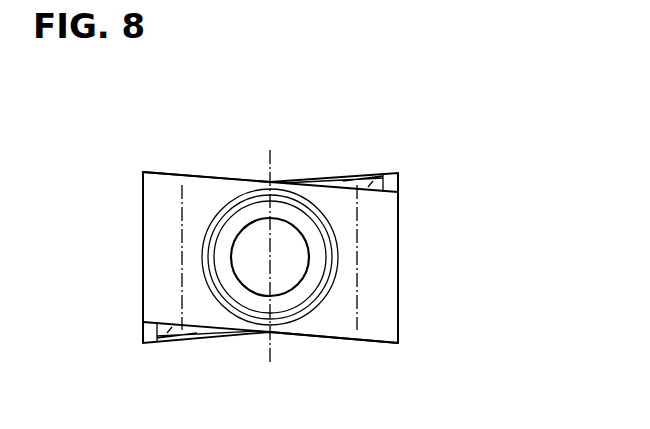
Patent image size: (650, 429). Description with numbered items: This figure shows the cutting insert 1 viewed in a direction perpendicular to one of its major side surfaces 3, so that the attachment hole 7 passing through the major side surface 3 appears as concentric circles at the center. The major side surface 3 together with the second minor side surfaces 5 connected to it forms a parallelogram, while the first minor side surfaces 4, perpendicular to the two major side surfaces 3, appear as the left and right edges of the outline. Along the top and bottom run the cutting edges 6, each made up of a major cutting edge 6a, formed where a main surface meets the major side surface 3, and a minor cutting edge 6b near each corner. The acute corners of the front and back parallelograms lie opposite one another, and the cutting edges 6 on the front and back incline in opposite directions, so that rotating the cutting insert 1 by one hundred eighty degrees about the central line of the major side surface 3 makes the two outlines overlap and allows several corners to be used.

The cutting insert 1 is at (427, 236).
The major side surface 3 is at (318, 387).
The first minor side surface 4 is at (140, 213).
The second minor side surface 5 is at (150, 280).
The cutting edge 6 is at (147, 110).
The major cutting edge 6a is at (222, 172).
The minor cutting edge 6b is at (155, 172).
The attachment hole 7 is at (245, 257).